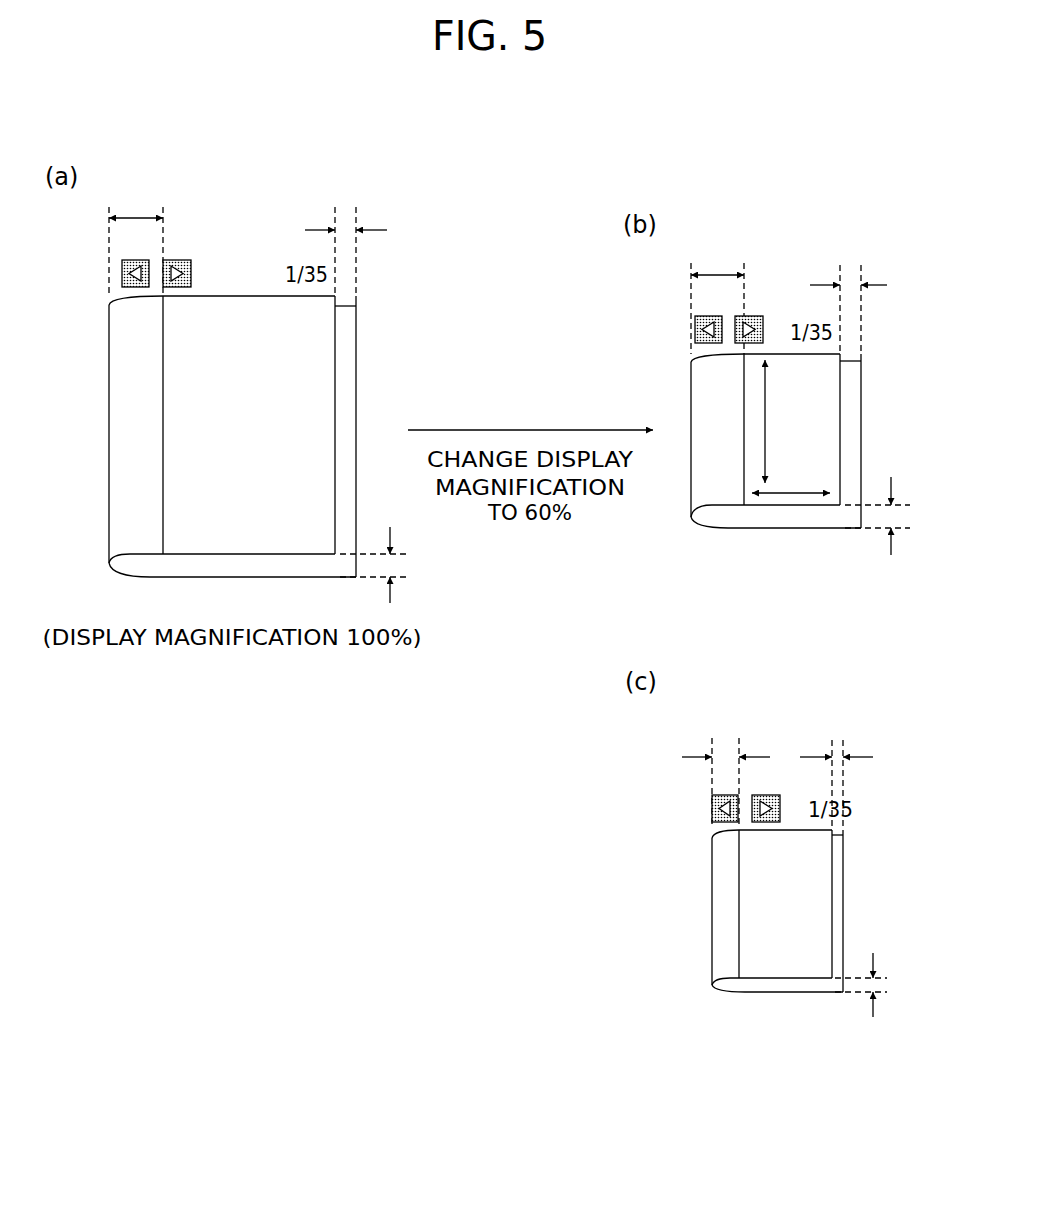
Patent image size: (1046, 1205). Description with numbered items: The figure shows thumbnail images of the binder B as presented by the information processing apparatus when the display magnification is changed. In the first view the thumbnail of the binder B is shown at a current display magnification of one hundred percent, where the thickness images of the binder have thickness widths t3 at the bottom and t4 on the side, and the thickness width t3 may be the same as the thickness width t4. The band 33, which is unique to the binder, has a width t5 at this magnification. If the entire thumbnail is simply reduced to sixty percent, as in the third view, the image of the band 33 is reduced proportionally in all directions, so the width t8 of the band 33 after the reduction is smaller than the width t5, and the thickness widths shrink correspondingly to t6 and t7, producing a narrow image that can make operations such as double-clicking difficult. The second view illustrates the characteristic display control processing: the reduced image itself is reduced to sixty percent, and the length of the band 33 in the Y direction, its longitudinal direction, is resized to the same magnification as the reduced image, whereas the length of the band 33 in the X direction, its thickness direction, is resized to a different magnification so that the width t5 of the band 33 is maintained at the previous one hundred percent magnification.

The band 33 is at (122, 392).
The binder B is at (232, 459).
The thickness width t3 is at (637, 540).
The thickness width t4 is at (596, 269).
The width of the band t5 is at (426, 270).
The reduced bottom margin width t6 is at (896, 985).
The reduced right margin width t7 is at (836, 771).
The width of the band after reduction t8 is at (726, 770).
The X direction X is at (791, 477).
The Y direction Y is at (775, 421).